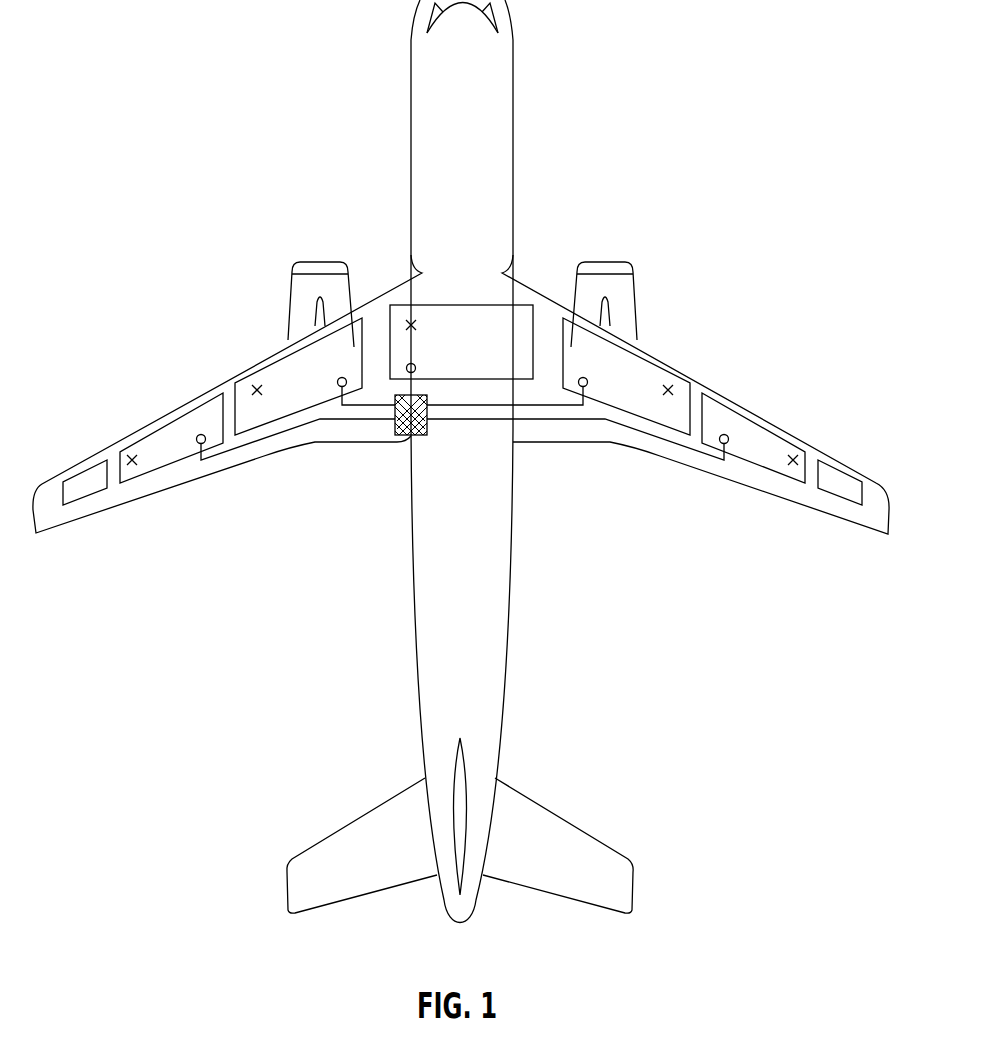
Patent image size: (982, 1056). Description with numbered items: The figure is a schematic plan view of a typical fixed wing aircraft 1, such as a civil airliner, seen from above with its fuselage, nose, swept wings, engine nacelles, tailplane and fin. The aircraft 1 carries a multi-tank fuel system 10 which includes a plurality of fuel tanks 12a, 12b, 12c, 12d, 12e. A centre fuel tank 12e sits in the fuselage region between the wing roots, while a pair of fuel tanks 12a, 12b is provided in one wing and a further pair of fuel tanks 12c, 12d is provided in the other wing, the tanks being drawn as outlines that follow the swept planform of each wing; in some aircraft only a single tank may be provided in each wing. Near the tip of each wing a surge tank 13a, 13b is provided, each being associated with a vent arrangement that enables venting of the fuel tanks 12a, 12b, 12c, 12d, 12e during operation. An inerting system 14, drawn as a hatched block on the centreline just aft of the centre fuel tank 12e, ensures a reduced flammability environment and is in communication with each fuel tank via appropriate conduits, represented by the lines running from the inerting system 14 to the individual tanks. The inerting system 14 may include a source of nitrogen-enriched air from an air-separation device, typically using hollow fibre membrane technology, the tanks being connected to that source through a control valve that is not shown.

The aircraft 1 is at (601, 126).
The multi-tank fuel system 10 is at (668, 307).
The fuel tank 12a is at (690, 355).
The fuel tank 12b is at (760, 425).
The fuel tank 12c is at (270, 362).
The fuel tank 12d is at (163, 423).
The centre fuel tank 12e is at (522, 308).
The surge tank 13a is at (842, 497).
The surge tank 13b is at (73, 503).
The inerting system 14 is at (400, 437).